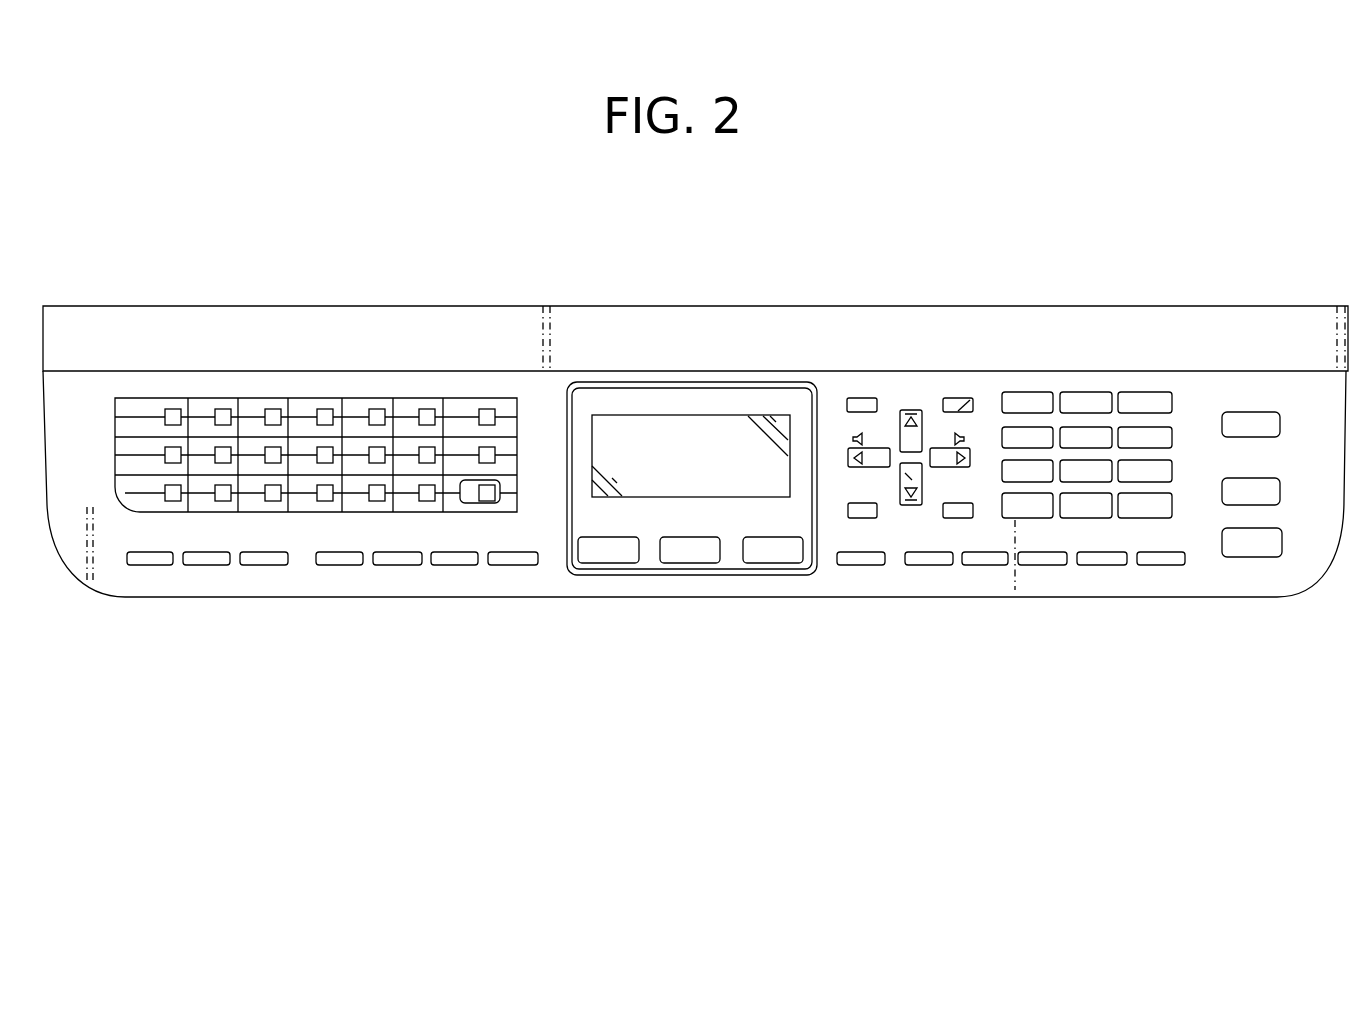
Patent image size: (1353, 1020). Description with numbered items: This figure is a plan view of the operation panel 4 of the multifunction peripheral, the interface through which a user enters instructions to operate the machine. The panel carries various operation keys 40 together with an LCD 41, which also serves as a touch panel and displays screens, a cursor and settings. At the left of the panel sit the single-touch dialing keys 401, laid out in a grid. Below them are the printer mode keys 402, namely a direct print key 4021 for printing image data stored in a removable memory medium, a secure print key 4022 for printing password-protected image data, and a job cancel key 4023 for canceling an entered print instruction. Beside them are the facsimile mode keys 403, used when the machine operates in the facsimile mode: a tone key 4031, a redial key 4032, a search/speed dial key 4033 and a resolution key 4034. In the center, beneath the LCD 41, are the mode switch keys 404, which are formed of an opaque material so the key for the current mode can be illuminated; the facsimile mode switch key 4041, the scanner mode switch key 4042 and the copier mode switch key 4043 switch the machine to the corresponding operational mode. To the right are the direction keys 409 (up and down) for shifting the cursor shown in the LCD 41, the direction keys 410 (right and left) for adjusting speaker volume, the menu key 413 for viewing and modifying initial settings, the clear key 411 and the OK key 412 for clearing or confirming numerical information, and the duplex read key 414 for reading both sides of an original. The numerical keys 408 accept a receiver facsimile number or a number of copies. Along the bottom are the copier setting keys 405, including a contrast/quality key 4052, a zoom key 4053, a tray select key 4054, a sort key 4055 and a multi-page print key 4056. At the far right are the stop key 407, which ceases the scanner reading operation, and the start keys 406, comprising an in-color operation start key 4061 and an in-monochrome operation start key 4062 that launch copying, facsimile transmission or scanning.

The operation panel 4 is at (1118, 201).
The operation keys 40 is at (728, 482).
The LCD 41 is at (645, 432).
The single-touch dialing keys 401 is at (146, 386).
The printer mode keys 402 is at (171, 670).
The facsimile mode keys 403 is at (391, 670).
The mode switch keys 404 is at (645, 582).
The copier setting keys 405 is at (1053, 670).
The start keys 406 is at (1242, 670).
The stop key 407 is at (1280, 423).
The numerical keys 408 is at (1117, 382).
The direction keys (up and down) 409 is at (930, 452).
The direction keys (right and left) 410 is at (846, 450).
The clear key 411 is at (848, 512).
The OK key 412 is at (958, 518).
The menu key 413 is at (970, 448).
The duplex read key 414 is at (860, 566).
The direct print key 4021 is at (152, 565).
The secure print key 4022 is at (225, 565).
The job cancel key 4023 is at (268, 565).
The tone key 4031 is at (352, 565).
The redial key 4032 is at (412, 565).
The search/speed dial key 4033 is at (470, 565).
The resolution key 4034 is at (528, 565).
The facsimile mode switch key 4041 is at (600, 563).
The scanner mode switch key 4042 is at (680, 563).
The copier mode switch key 4043 is at (762, 563).
The contrast/quality key 4052 is at (932, 565).
The zoom key 4053 is at (1000, 565).
The tray select key 4054 is at (1062, 565).
The sort key 4055 is at (1118, 565).
The multi-page print key 4056 is at (1162, 565).
The in-color operation start key 4061 is at (1280, 492).
The in-monochrome operation start key 4062 is at (1267, 548).